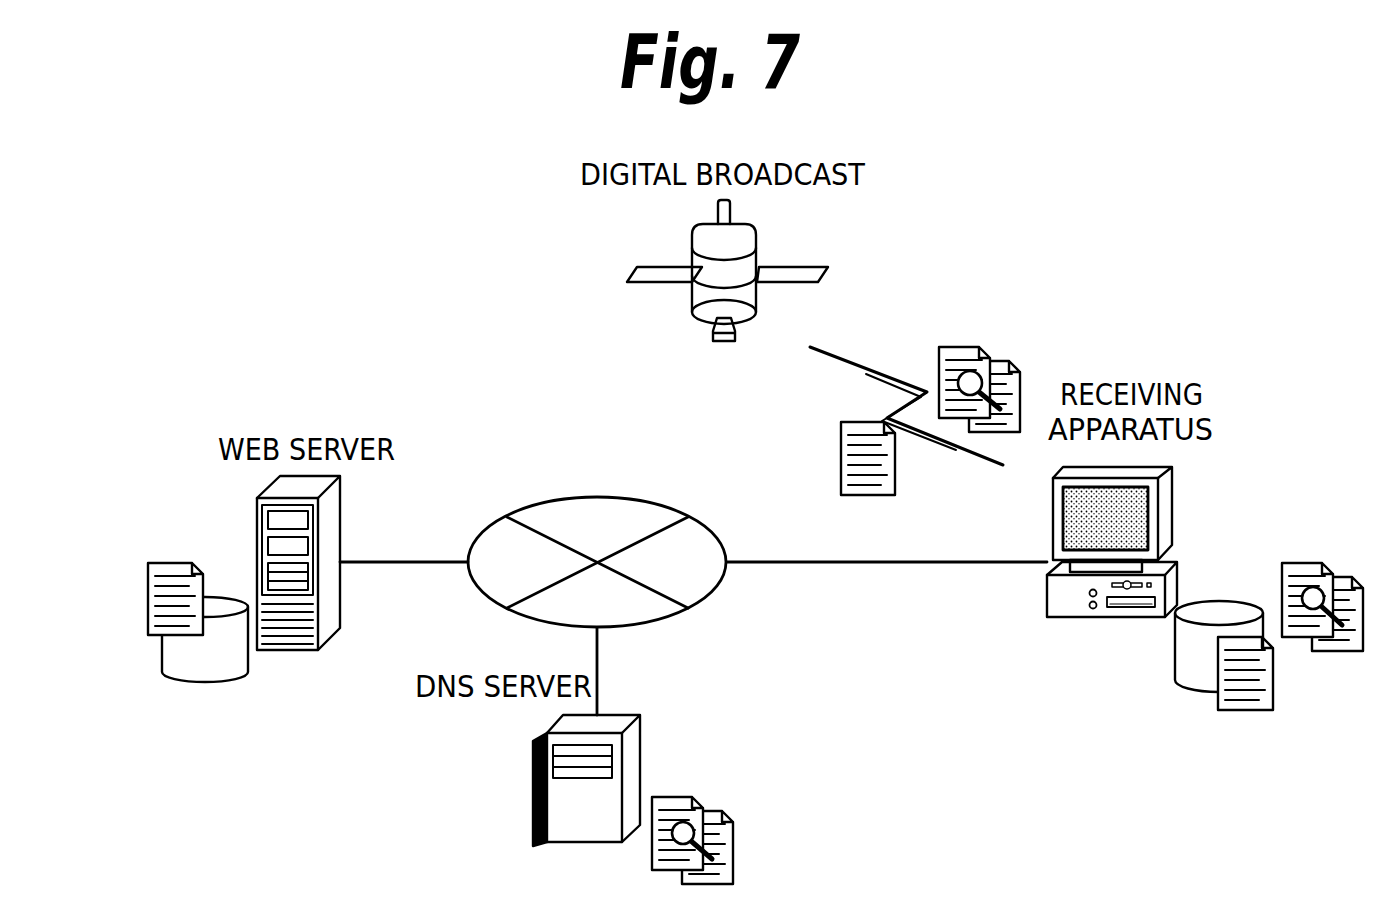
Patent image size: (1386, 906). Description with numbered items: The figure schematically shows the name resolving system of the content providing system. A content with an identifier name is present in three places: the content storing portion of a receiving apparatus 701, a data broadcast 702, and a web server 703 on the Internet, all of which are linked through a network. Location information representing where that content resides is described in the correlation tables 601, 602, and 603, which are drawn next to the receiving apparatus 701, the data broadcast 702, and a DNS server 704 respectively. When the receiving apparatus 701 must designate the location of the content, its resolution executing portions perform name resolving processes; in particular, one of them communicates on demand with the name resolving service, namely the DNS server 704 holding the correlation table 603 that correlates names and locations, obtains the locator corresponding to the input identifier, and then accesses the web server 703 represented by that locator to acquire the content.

The correlation table 601 is at (1306, 562).
The correlation table 602 is at (962, 346).
The correlation table 603 is at (706, 799).
The receiving apparatus 701 is at (1172, 507).
The data broadcast 702 is at (758, 228).
The web server 703 is at (340, 482).
The DNS server 704 is at (627, 713).